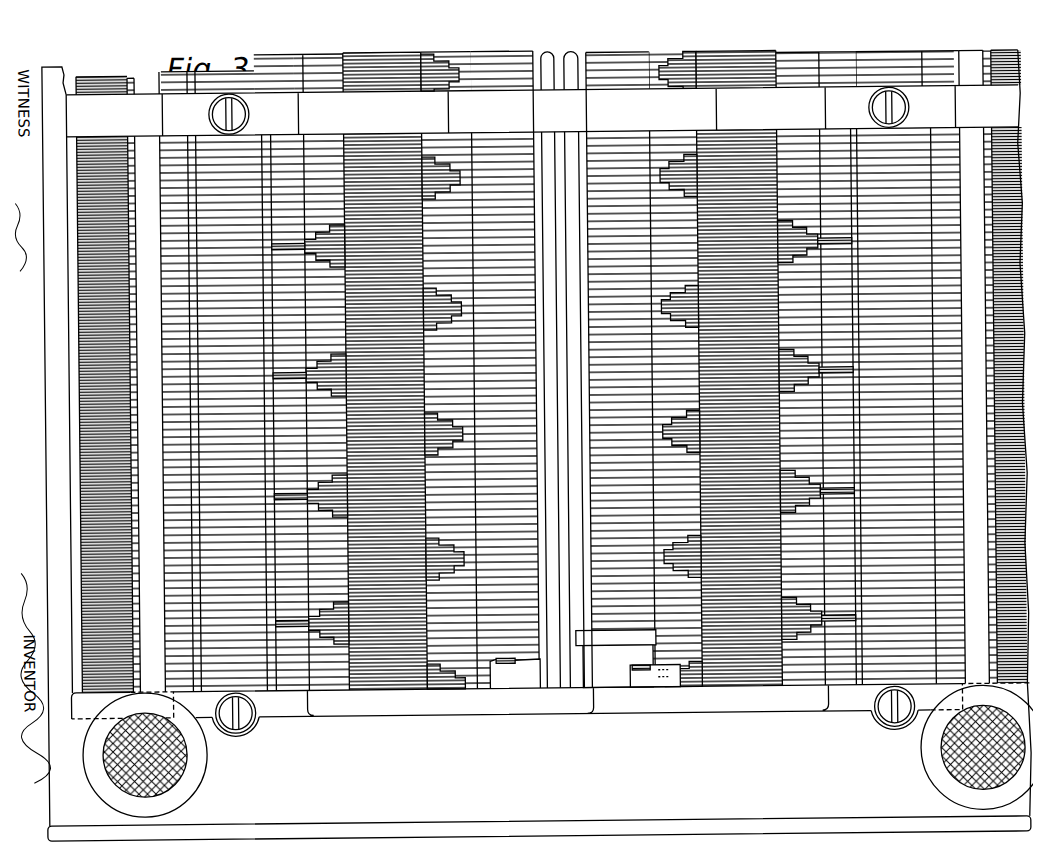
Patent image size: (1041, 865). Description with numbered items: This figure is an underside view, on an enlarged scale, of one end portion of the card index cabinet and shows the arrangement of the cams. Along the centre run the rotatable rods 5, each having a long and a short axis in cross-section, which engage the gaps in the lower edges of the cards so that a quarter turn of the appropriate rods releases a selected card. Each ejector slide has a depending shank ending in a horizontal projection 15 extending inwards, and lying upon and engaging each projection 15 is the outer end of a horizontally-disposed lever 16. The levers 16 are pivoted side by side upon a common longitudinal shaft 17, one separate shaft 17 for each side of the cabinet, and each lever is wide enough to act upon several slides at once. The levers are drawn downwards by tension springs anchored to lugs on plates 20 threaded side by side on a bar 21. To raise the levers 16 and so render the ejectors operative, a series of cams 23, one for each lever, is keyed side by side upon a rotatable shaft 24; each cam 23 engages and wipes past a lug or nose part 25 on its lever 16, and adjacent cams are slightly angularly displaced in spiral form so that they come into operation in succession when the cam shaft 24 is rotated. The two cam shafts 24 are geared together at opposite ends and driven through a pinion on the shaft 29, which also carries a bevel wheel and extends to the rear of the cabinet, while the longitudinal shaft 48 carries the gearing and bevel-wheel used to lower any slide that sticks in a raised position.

The horizontal projection 15 is at (93, 156).
The lever 16 is at (167, 183).
The shaft 17 is at (489, 44).
The plate 20 is at (232, 185).
The bar 21 is at (881, 47).
The cam 23 is at (391, 197).
The rotatable shaft 24 is at (366, 44).
The lug or nose part 25 is at (807, 162).
The longitudinal shaft 48 is at (506, 667).
The rotatable rod 5 is at (561, 647).
The shaft 29 is at (640, 672).